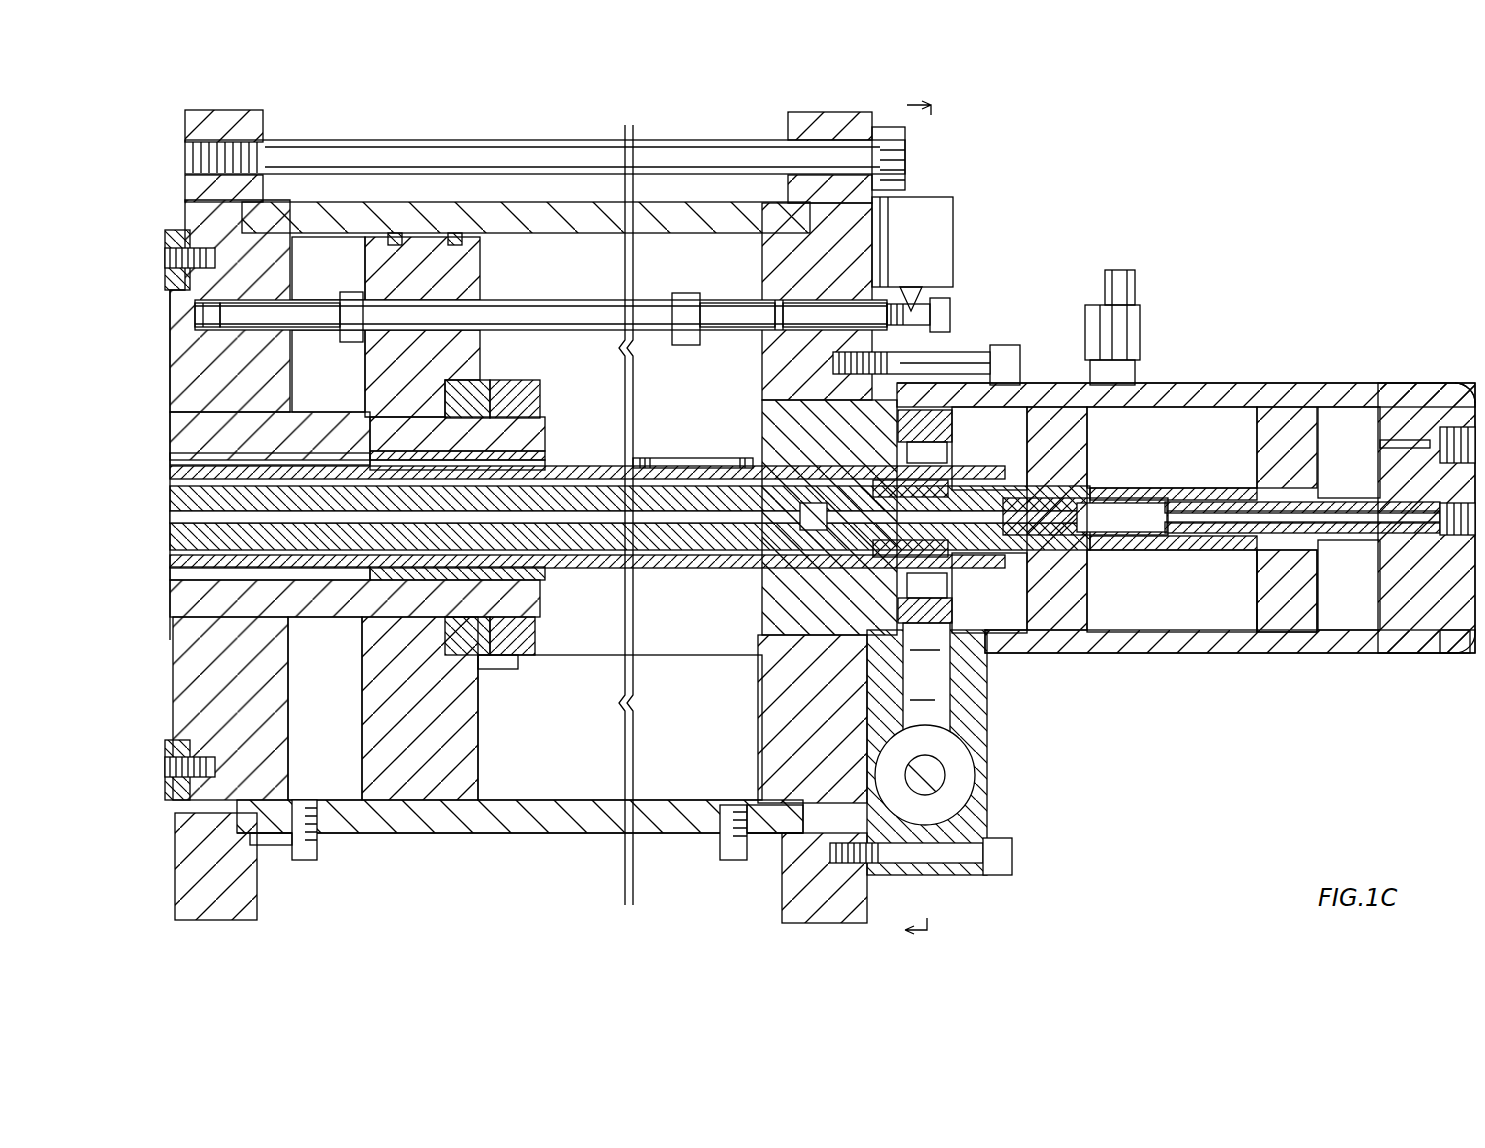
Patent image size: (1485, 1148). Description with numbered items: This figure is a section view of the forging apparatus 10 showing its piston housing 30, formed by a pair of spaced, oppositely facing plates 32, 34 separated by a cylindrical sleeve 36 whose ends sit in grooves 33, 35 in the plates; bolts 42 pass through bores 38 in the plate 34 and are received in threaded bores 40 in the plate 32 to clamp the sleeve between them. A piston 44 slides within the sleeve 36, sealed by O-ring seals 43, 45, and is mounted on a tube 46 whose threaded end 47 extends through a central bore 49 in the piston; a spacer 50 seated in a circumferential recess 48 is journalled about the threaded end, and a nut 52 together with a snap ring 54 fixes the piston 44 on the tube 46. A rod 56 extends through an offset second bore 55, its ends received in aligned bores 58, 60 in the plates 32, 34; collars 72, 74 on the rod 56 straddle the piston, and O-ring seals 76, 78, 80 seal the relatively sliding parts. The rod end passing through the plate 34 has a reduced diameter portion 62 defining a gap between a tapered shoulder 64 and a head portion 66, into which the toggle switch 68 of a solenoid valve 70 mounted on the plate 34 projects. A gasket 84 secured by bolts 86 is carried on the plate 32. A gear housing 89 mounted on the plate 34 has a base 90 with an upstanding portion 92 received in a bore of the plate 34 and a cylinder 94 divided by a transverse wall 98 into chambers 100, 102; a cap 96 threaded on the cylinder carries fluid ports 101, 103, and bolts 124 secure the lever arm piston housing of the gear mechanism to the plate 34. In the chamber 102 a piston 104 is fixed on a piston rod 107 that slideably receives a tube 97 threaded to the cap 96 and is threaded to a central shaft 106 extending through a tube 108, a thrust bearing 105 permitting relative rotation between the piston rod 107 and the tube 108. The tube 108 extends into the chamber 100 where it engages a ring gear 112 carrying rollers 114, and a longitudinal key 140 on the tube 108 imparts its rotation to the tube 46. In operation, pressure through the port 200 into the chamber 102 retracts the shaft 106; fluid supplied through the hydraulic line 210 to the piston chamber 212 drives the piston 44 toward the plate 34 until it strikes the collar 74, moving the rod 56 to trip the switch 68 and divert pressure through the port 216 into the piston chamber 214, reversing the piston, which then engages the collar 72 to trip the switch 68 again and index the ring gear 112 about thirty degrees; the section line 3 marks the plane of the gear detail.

The forging apparatus 10 is at (1075, 193).
The piston housing 30 is at (525, 865).
The plate 32 is at (250, 905).
The groove 33 is at (272, 835).
The plate 34 is at (800, 905).
The groove 35 is at (780, 833).
The cylindrical sleeve 36 is at (480, 825).
The bores 38 is at (800, 142).
The threaded bores 40 is at (250, 135).
The bolts 42 is at (498, 155).
The O-ring seal 43 is at (395, 232).
The piston 44 is at (435, 790).
The O-ring seal 45 is at (455, 232).
The tube 46 is at (535, 600).
The threaded end 47 is at (540, 420).
The circumferential recess 48 is at (490, 657).
The central bore 49 is at (445, 428).
The spacer 50 is at (470, 380).
The nut 52 is at (535, 385).
The snap ring 54 is at (360, 640).
The second bore 55 is at (470, 316).
The rod 56 is at (650, 300).
The bore 58 is at (200, 325).
The bore 60 is at (790, 330).
The reduced diameter portion 62 is at (920, 312).
The tapered shoulder 64 is at (900, 287).
The head portion 66 is at (948, 312).
The toggle switch 68 is at (912, 300).
The solenoid valve 70 is at (925, 200).
The collar 72 is at (350, 342).
The collar 74 is at (686, 345).
The O-ring seal 76 is at (255, 298).
The O-ring seal 78 is at (440, 297).
The O-ring seal 80 is at (780, 310).
The gasket 84 is at (185, 800).
The bolts 86 is at (190, 760).
The gear housing 89 is at (1020, 350).
The base 90 is at (880, 672).
The upstanding portion 92 is at (770, 610).
The cylinder 94 is at (1255, 655).
The cap 96 is at (1002, 345).
The tube 97 is at (1310, 655).
The transverse wall 98 is at (1085, 588).
The chamber 100 is at (1030, 405).
The fluid port 101 is at (1420, 545).
The chamber 102 is at (1185, 420).
The fluid port 103 is at (1447, 435).
The piston 104 is at (1312, 405).
The thrust bearing 105 is at (780, 680).
The central shaft 106 is at (700, 540).
The piston rod 107 is at (1210, 492).
The tube 108 is at (1325, 495).
The ring gear 112 is at (940, 612).
The rollers 114 is at (940, 448).
The bolts 124 is at (1012, 858).
The longitudinal key 140 is at (688, 467).
The port 200 is at (1130, 390).
The hydraulic line 210 is at (310, 835).
The piston chamber 212 is at (312, 238).
The piston chamber 214 is at (600, 780).
The port 216 is at (720, 850).
The section line 3 is at (930, 520).